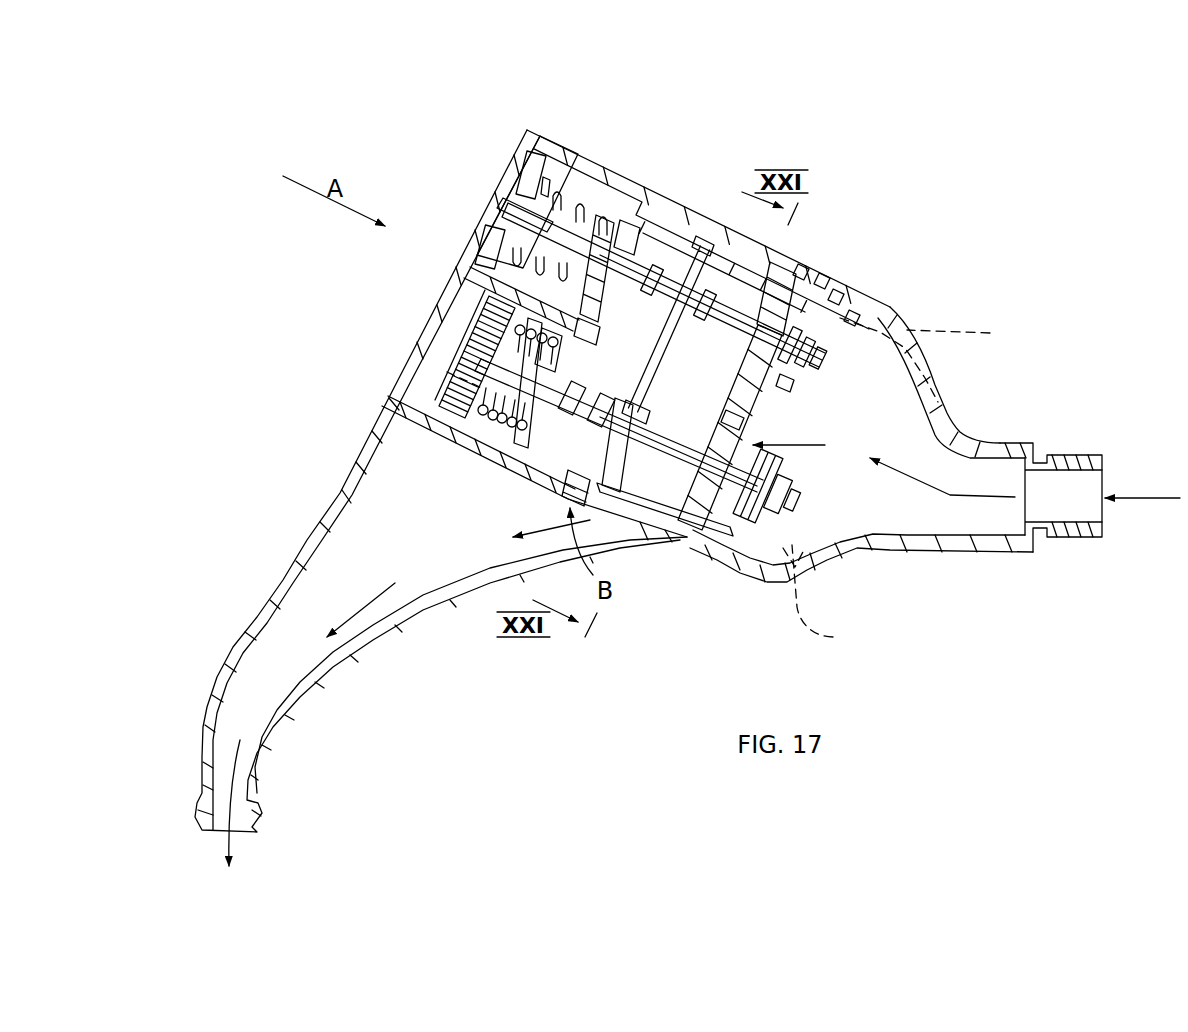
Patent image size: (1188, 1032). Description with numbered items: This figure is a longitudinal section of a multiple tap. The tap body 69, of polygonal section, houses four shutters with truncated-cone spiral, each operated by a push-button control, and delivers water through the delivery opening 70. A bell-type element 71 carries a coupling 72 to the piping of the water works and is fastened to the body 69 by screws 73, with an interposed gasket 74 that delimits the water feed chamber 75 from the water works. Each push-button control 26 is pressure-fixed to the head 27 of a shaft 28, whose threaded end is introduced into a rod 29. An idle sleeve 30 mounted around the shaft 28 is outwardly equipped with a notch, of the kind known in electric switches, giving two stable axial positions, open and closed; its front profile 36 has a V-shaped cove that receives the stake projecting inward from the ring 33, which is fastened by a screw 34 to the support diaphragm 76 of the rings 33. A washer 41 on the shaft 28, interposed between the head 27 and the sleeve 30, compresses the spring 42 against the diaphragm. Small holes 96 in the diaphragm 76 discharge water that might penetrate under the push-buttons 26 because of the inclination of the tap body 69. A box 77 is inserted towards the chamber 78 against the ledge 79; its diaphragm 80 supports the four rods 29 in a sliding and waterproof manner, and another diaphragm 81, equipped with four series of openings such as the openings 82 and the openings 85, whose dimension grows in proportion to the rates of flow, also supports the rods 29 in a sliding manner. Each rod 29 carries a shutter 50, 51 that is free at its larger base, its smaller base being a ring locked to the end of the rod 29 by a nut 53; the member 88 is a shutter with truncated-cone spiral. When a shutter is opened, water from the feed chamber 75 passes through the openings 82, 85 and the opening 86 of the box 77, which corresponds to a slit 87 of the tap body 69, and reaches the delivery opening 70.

The push-button control 26 is at (487, 237).
The head of the shaft 27 is at (493, 222).
The shaft 28 is at (447, 372).
The rod 29 is at (663, 293).
The idle sleeve 30 is at (480, 333).
The ring 33 is at (600, 225).
The screw 34 is at (640, 225).
The front profile of the notch 36 is at (590, 325).
The washer 41 is at (548, 170).
The spring 42 is at (495, 292).
The shutter 50 is at (836, 290).
The shutter 51 is at (853, 312).
The nut 53 is at (815, 370).
The body of the multiple tap 69 is at (667, 203).
The delivery opening 70 is at (205, 777).
The bell-type element 71 is at (890, 310).
The coupling 72 is at (1073, 455).
The screws 73 is at (904, 482).
The gasket 74 is at (824, 276).
The water feed chamber 75 is at (898, 437).
The support diaphragm 76 is at (595, 295).
The box 77 is at (770, 270).
The chamber 78 is at (600, 395).
The ledge 79 is at (740, 255).
The diaphragm of the box 80 is at (660, 378).
The diaphragm of the box 81 is at (740, 419).
The openings 82 is at (801, 266).
The openings 85 is at (707, 447).
The opening of the box 86 is at (652, 530).
The slit of the tap body 87 is at (632, 507).
The shutter with truncated cone spiral 88 is at (791, 392).
The small holes 96 is at (513, 463).